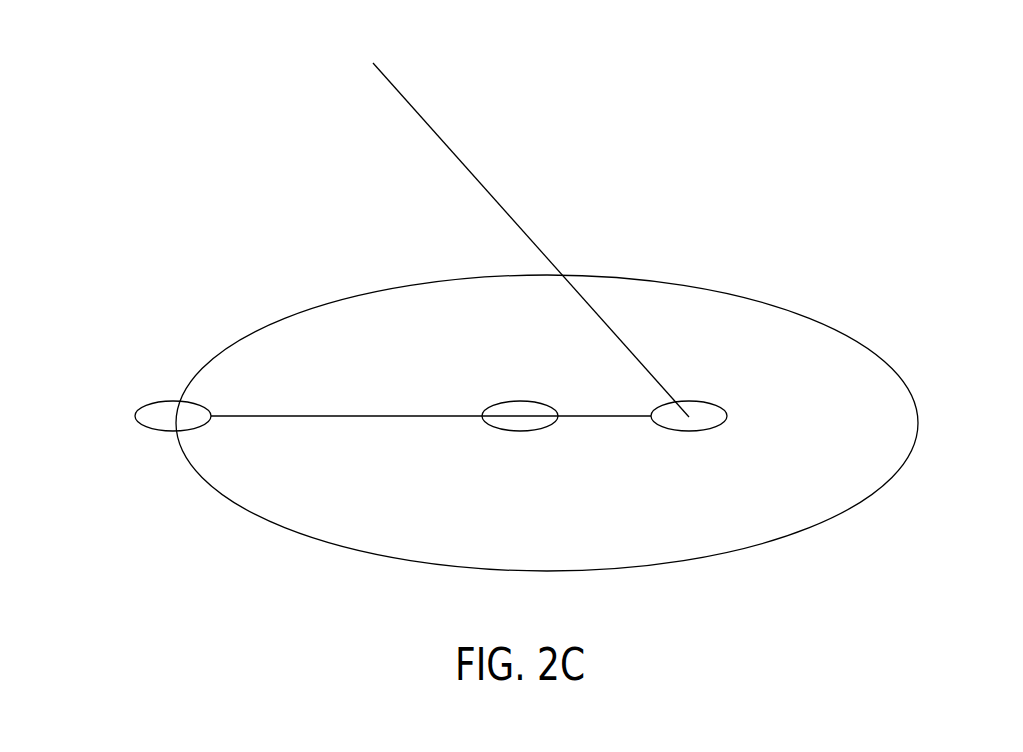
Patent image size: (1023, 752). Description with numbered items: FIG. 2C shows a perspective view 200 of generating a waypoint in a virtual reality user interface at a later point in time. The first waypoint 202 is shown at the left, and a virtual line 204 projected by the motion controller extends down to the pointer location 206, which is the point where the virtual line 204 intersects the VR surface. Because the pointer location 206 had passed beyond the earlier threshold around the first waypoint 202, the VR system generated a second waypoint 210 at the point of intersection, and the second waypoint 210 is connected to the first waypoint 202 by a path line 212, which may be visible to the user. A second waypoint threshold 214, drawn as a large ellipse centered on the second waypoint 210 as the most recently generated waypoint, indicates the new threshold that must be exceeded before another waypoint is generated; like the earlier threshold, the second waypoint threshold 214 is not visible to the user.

The perspective view 200 is at (152, 208).
The first waypoint 202 is at (205, 424).
The virtual line 204 is at (473, 168).
The pointer location 206 is at (725, 419).
The second waypoint 210 is at (556, 420).
The path line 212 is at (365, 416).
The second waypoint threshold 214 is at (918, 420).